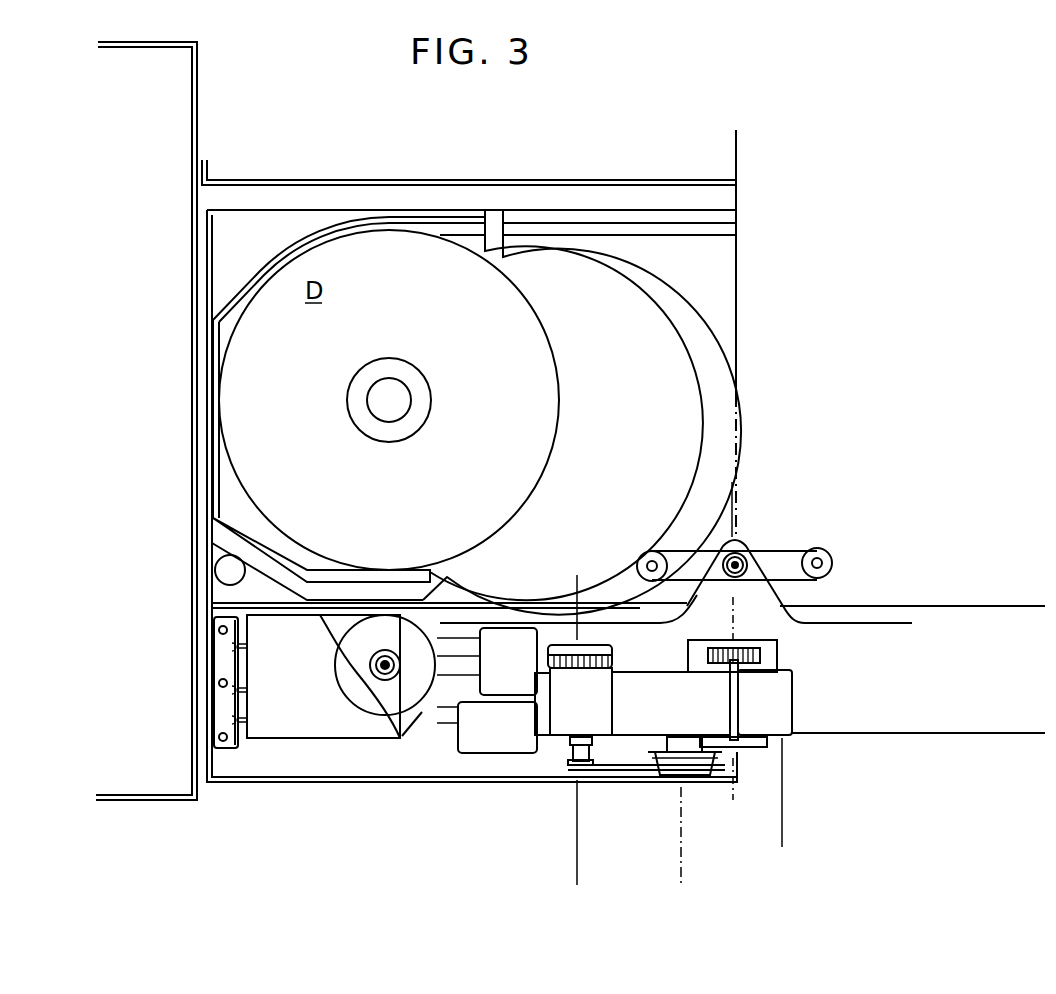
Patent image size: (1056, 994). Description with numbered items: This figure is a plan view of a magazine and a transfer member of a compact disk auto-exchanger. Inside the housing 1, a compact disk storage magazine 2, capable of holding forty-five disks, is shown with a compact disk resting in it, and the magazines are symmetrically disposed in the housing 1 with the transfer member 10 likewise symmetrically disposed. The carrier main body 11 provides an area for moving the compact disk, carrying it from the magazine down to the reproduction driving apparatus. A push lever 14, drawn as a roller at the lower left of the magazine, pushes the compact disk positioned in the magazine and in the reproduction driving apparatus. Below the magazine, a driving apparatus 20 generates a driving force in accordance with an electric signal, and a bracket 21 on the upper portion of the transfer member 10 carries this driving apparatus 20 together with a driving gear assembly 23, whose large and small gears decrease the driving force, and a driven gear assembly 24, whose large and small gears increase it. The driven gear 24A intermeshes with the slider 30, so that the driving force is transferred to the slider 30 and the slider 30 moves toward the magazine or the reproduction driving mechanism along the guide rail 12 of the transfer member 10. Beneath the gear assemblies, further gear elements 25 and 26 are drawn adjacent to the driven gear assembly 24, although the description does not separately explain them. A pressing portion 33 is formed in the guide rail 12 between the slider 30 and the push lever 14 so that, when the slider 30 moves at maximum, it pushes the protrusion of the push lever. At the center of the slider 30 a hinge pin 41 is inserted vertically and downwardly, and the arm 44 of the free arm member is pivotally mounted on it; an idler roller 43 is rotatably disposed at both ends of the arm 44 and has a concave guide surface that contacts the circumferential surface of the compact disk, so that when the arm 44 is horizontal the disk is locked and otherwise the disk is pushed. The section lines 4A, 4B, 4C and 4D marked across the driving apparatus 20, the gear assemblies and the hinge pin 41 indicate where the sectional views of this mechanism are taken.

The housing 1 is at (162, 250).
The compact disk storage magazine 2 is at (257, 228).
The transfer member 10 is at (746, 188).
The carrier main body 11 is at (710, 270).
The guide rail 12 is at (415, 718).
The push lever 14 is at (232, 572).
The driving apparatus 20 is at (560, 722).
The bracket 21 is at (783, 699).
The driving gear assembly 23 is at (741, 701).
The driven gear assembly 24 is at (687, 743).
The driven gear 24A is at (765, 652).
The worm gear 25 is at (699, 776).
The mounting plate 26 is at (757, 747).
The slider 30 is at (848, 673).
The pressing portion 33 is at (480, 742).
The hinge pin 41 is at (737, 556).
The idler roller 43 is at (817, 562).
The arm 44 is at (775, 553).
The section line 4A is at (577, 588).
The section line 4B is at (688, 597).
The section line 4C is at (733, 597).
The section line 4D is at (732, 493).